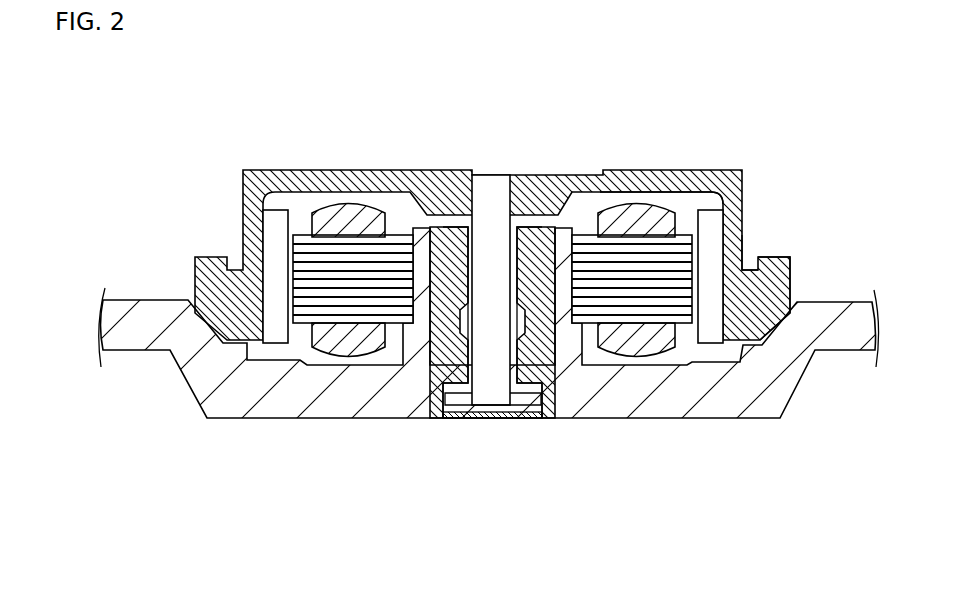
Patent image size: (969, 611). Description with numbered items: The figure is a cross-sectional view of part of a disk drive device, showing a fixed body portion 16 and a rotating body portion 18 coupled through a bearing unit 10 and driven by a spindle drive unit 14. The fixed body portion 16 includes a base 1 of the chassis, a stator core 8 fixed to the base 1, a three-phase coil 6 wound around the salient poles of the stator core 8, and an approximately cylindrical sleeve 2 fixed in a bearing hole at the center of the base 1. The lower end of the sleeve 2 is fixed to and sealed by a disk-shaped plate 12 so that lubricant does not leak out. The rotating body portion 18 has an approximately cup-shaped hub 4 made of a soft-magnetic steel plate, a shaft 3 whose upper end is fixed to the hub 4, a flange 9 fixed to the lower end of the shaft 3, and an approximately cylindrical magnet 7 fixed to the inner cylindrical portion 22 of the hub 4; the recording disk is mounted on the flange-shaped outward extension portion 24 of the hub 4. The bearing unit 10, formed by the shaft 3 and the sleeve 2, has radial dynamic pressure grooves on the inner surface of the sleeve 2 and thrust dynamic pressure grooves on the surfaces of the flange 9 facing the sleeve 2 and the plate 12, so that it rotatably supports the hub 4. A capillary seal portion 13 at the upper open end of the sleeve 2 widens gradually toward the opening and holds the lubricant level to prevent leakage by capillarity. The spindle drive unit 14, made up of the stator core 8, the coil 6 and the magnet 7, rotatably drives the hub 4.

The base 1 is at (770, 400).
The sleeve 2 is at (443, 367).
The shaft 3 is at (497, 195).
The hub 4 is at (285, 173).
The coil 6 is at (633, 345).
The magnet 7 is at (710, 228).
The stator core 8 is at (667, 307).
The flange 9 is at (462, 395).
The bearing unit 10 is at (550, 426).
The plate 12 is at (513, 412).
The capillary seal portion 13 is at (462, 228).
The spindle drive unit 14 is at (684, 206).
The fixed body portion 16 is at (236, 455).
The rotating body portion 18 is at (215, 167).
The inner cylindrical portion 22 is at (735, 257).
The outward extension portion 24 is at (780, 277).